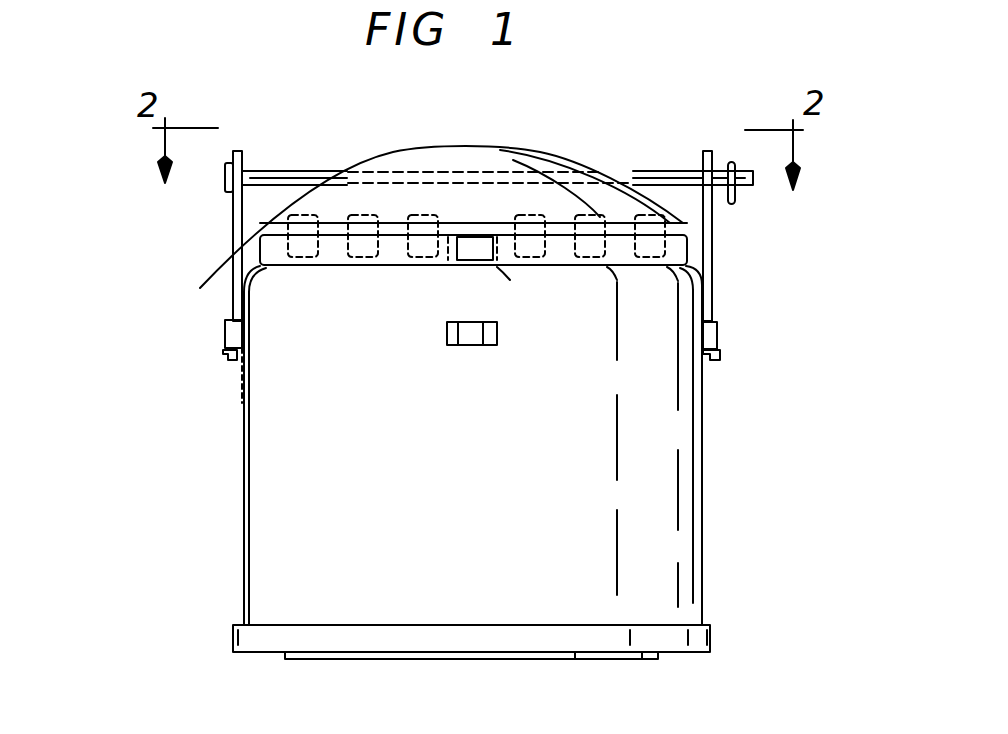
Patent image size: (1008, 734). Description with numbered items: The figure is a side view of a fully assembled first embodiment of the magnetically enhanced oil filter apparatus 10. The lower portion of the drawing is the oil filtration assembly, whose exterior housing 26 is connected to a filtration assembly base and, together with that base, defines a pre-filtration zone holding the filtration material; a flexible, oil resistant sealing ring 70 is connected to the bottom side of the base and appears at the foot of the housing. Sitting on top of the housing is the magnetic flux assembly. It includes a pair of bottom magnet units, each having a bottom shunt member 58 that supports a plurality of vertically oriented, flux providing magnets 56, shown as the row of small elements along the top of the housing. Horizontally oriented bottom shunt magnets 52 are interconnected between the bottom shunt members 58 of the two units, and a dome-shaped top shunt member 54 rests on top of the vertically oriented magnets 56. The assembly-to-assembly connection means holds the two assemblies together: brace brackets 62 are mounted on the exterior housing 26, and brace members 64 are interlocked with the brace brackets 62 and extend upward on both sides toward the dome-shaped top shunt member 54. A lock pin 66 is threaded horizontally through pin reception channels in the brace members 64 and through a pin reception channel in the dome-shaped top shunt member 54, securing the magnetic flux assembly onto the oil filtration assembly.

The magnetically enhanced oil filter apparatus 10 is at (212, 476).
The exterior housing 26 is at (677, 547).
The horizontally oriented bottom shunt magnets 52 is at (480, 253).
The dome-shaped top shunt member 54 is at (482, 152).
The vertically oriented flux providing magnets 56 is at (262, 256).
The bottom shunt member 58 is at (258, 242).
The brace brackets 62 is at (225, 340).
The brace members 64 is at (233, 224).
The lock pin 66 is at (288, 177).
The sealing ring 70 is at (283, 655).